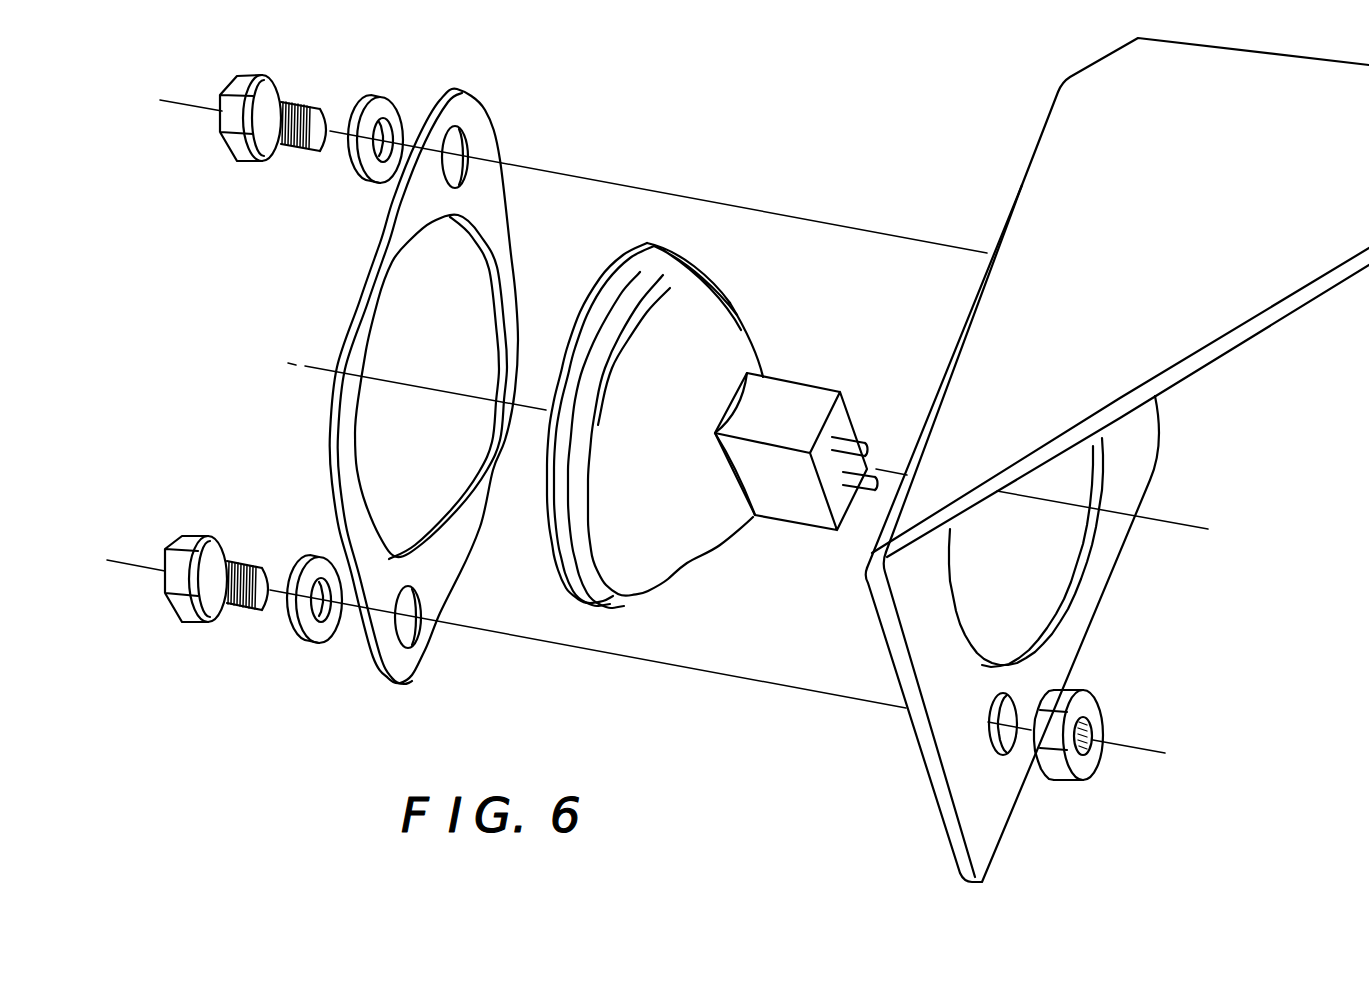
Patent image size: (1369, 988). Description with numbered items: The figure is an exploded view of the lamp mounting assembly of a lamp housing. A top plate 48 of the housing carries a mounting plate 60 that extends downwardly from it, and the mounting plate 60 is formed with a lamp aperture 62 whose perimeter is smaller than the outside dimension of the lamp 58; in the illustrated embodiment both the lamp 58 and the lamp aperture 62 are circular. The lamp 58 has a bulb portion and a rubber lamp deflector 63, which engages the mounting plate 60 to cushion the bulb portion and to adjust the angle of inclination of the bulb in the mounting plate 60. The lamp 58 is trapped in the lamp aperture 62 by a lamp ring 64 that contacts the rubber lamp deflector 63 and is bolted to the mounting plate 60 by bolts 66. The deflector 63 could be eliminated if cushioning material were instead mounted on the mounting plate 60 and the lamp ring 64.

The top plate 48 is at (1190, 198).
The lamp 58 is at (748, 343).
The mounting plate 60 is at (1008, 812).
The lamp aperture 62 is at (1068, 582).
The rubber lamp deflector 63 is at (647, 252).
The lamp ring 64 is at (484, 149).
The bolts 66 is at (359, 102).